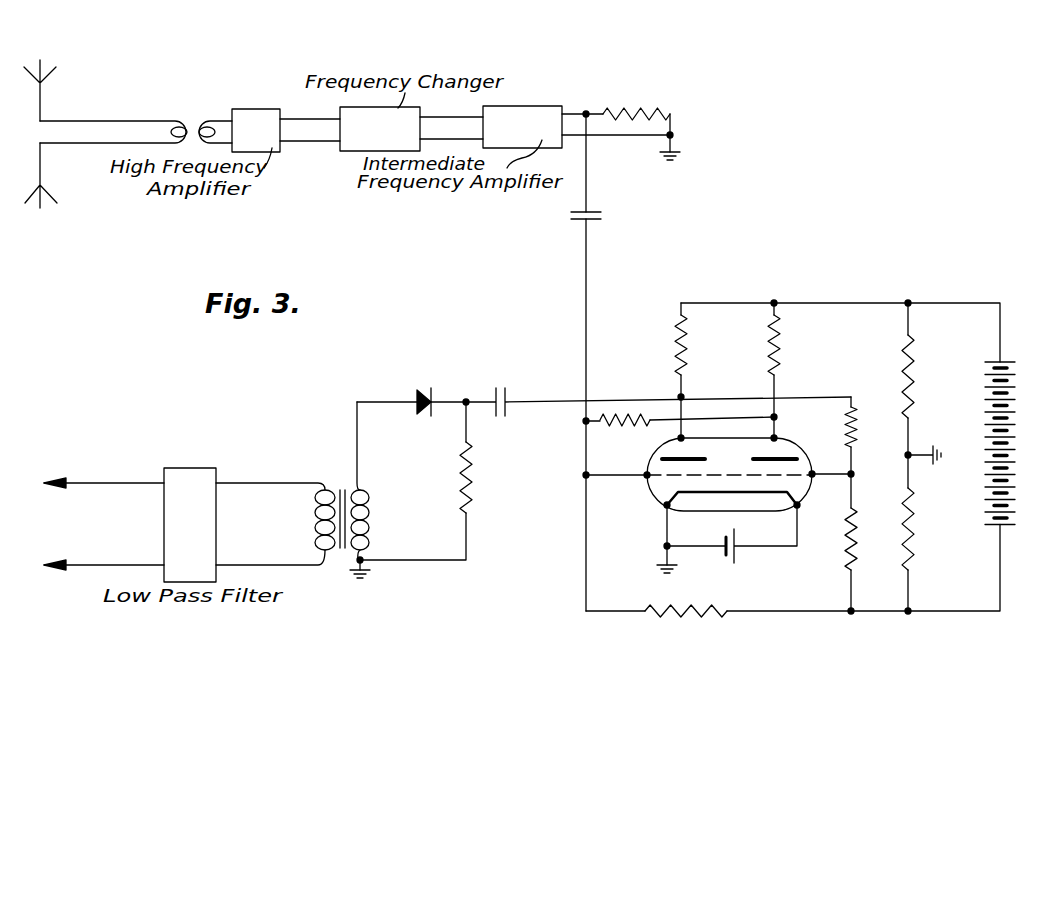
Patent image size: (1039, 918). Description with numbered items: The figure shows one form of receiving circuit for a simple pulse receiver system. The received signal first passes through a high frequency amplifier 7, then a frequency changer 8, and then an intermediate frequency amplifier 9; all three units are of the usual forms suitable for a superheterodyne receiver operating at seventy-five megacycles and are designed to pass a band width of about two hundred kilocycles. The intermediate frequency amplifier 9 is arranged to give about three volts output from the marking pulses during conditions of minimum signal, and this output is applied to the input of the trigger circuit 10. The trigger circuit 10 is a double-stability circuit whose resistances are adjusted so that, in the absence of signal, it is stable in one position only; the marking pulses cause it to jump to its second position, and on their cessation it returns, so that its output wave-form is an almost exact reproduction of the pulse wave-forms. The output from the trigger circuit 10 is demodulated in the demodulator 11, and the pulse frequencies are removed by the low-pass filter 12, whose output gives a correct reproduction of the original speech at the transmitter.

The high frequency amplifier 7 is at (256, 130).
The frequency changer 8 is at (380, 129).
The intermediate frequency amplifier 9 is at (522, 127).
The trigger circuit 10 is at (803, 498).
The demodulator 11 is at (432, 392).
The low-pass filter 12 is at (185, 586).